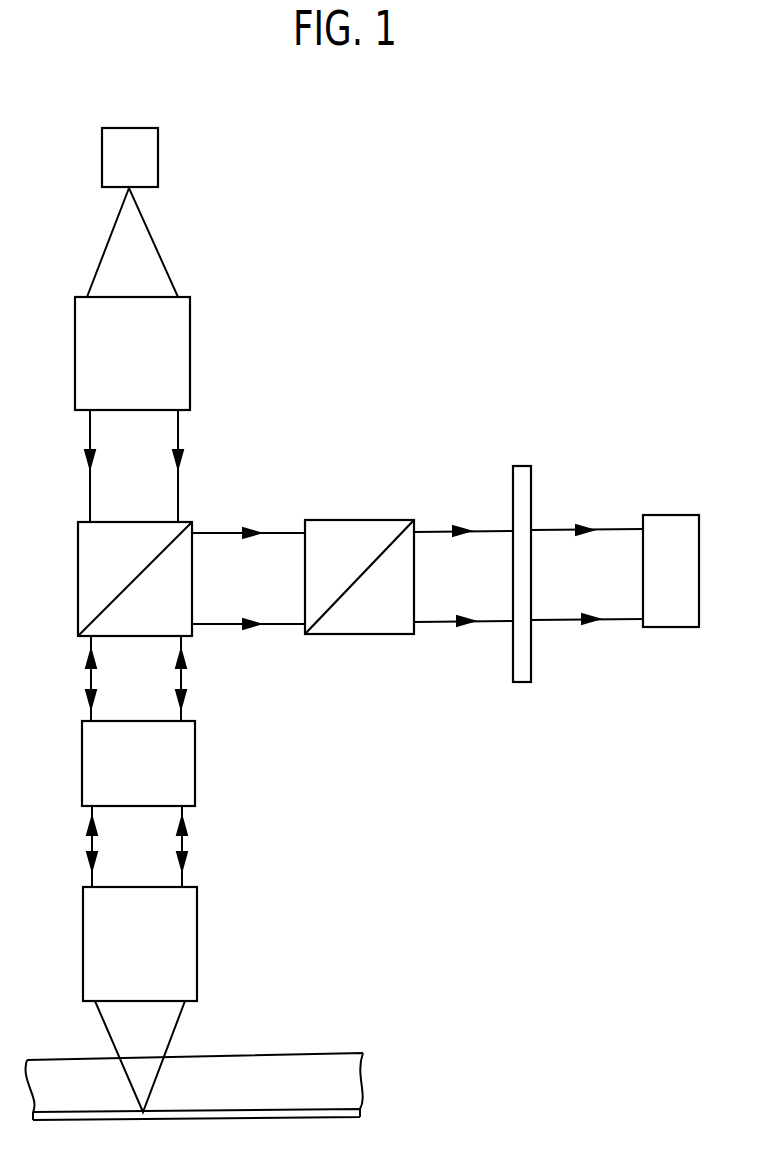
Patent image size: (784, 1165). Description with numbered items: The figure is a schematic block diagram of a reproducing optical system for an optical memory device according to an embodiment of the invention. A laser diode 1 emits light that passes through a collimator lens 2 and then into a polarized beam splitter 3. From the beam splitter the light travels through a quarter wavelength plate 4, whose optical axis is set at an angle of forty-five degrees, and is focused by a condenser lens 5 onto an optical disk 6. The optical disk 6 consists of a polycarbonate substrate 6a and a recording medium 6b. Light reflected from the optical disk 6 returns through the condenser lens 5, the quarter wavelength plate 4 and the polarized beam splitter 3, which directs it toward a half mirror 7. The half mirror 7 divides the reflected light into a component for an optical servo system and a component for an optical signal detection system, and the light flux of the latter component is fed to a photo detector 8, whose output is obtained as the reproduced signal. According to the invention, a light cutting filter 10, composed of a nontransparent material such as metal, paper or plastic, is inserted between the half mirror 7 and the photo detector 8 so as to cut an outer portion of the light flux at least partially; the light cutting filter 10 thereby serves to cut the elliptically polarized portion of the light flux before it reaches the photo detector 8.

The laser diode 1 is at (158, 162).
The collimator lens 2 is at (190, 367).
The polarized beam splitter 3 is at (192, 522).
The quarter wavelength plate 4 is at (195, 770).
The condenser lens 5 is at (197, 940).
The optical disk 6 is at (353, 1083).
The polycarbonate substrate 6a is at (353, 1077).
The recording medium 6b is at (357, 1112).
The half mirror 7 is at (362, 634).
The photo detector 8 is at (662, 515).
The light cutting filter 10 is at (518, 466).